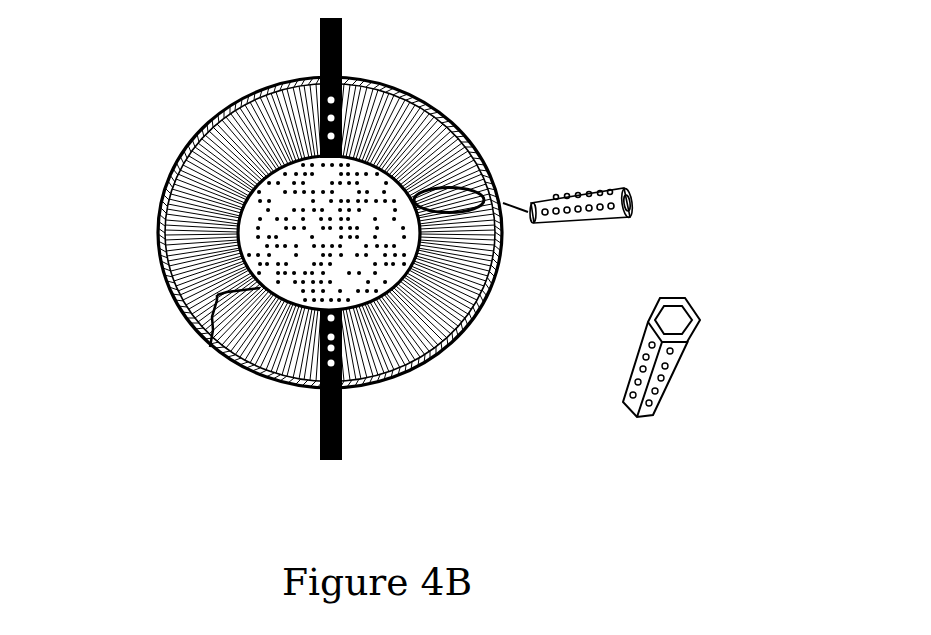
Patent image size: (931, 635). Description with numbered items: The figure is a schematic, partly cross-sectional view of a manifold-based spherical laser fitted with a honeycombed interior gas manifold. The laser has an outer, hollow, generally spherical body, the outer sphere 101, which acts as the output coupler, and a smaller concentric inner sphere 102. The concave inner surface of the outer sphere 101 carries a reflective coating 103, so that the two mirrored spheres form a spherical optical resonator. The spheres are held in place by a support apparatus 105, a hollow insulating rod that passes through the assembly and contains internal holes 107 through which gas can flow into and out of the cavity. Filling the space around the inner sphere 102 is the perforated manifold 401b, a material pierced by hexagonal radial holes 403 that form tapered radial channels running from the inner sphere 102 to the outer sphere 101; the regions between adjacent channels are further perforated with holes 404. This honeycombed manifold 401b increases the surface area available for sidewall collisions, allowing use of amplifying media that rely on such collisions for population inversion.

The outer sphere 101 is at (400, 93).
The inner sphere 102 is at (325, 283).
The reflective coating 103 is at (457, 130).
The support apparatus 105 is at (320, 437).
The internal holes 107 is at (320, 117).
The perforated manifold 401b is at (217, 295).
The radial holes 403 is at (672, 321).
The holes 404 is at (592, 192).